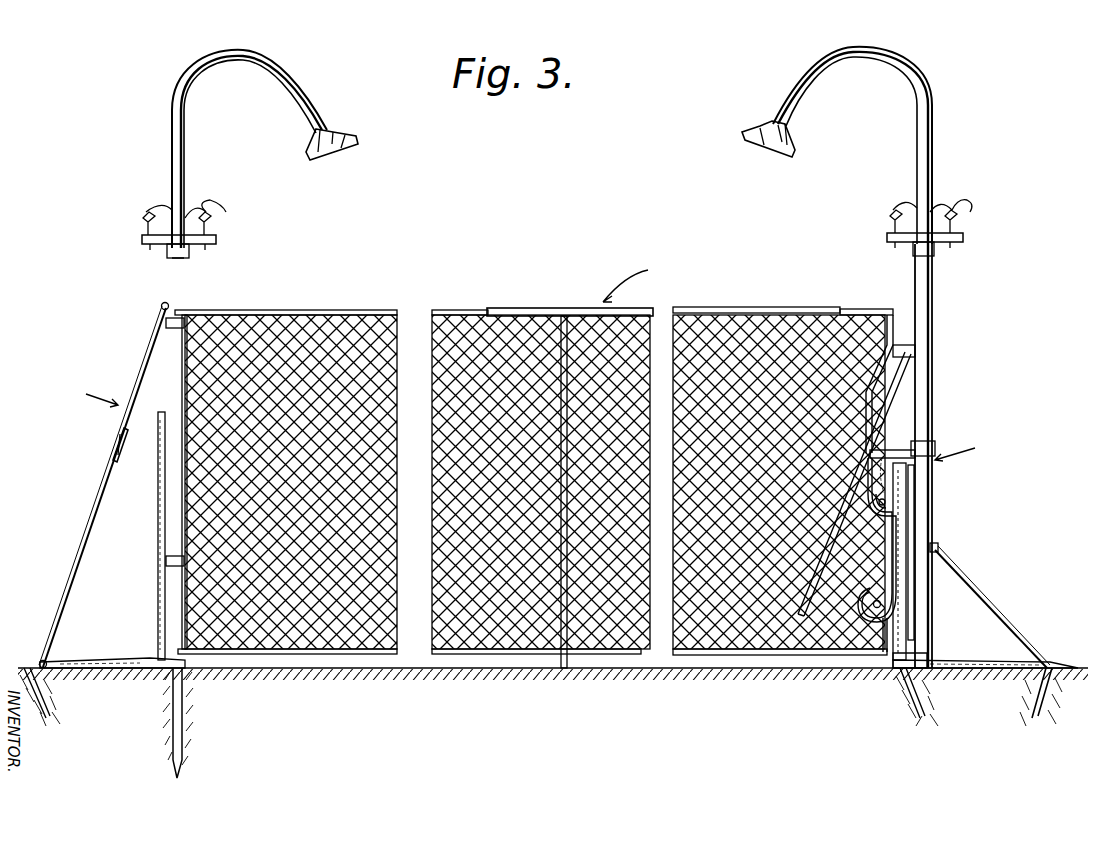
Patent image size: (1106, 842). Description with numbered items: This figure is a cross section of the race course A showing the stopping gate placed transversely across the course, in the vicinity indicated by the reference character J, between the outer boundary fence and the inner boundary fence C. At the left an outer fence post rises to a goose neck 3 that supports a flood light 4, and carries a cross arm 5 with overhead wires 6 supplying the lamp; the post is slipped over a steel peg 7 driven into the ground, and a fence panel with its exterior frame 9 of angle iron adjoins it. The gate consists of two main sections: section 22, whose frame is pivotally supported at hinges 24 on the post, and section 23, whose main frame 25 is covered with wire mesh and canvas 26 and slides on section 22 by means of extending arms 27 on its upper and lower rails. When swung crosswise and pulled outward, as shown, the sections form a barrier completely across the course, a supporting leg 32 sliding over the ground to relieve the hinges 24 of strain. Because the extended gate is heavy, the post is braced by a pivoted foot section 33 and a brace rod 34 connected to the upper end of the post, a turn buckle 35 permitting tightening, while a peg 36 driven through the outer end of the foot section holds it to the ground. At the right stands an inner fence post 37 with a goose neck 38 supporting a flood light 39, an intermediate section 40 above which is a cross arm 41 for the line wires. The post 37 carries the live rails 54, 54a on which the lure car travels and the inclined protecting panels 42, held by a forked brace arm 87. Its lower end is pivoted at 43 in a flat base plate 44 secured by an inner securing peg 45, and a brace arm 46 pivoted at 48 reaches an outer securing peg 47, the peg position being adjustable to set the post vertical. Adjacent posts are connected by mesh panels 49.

The goose neck 3 is at (200, 72).
The flood light 4 is at (352, 130).
The cross arm 5 is at (216, 240).
The overhead wires 6 is at (140, 217).
The peg 7 is at (184, 727).
The exterior frame 9 is at (157, 492).
The gate section 22 is at (350, 310).
The gate section 23 is at (795, 312).
The hinge 24 is at (170, 322).
The main frame 25 is at (870, 310).
The wire mesh and canvas 26 is at (808, 348).
The extending arms 27 is at (515, 309).
The supporting leg 32 is at (567, 660).
The pivoted foot section 33 is at (128, 660).
The brace rod 34 is at (96, 497).
The turn buckle 35 is at (112, 443).
The peg 36 is at (48, 694).
The tubular metal post 37 is at (907, 482).
The goose neck 38 is at (902, 70).
The flood light 39 is at (795, 150).
The intermediate section 40 is at (933, 302).
The cross arm 41 is at (964, 240).
The protecting panel 42 is at (902, 394).
The pivotal connection 43 is at (944, 660).
The base plate 44 is at (968, 640).
The securing peg 45 is at (905, 705).
The brace arm 46 is at (1000, 617).
The outer securing peg 47 is at (1038, 712).
The pivotal connection 48 is at (938, 552).
The panel 49 is at (910, 522).
The rail 54 is at (880, 606).
The rail 54a is at (885, 503).
The brace arm 87 is at (898, 448).
The race course A is at (551, 237).
The inner boundary fence C is at (90, 394).
The stop gate location J is at (628, 282).